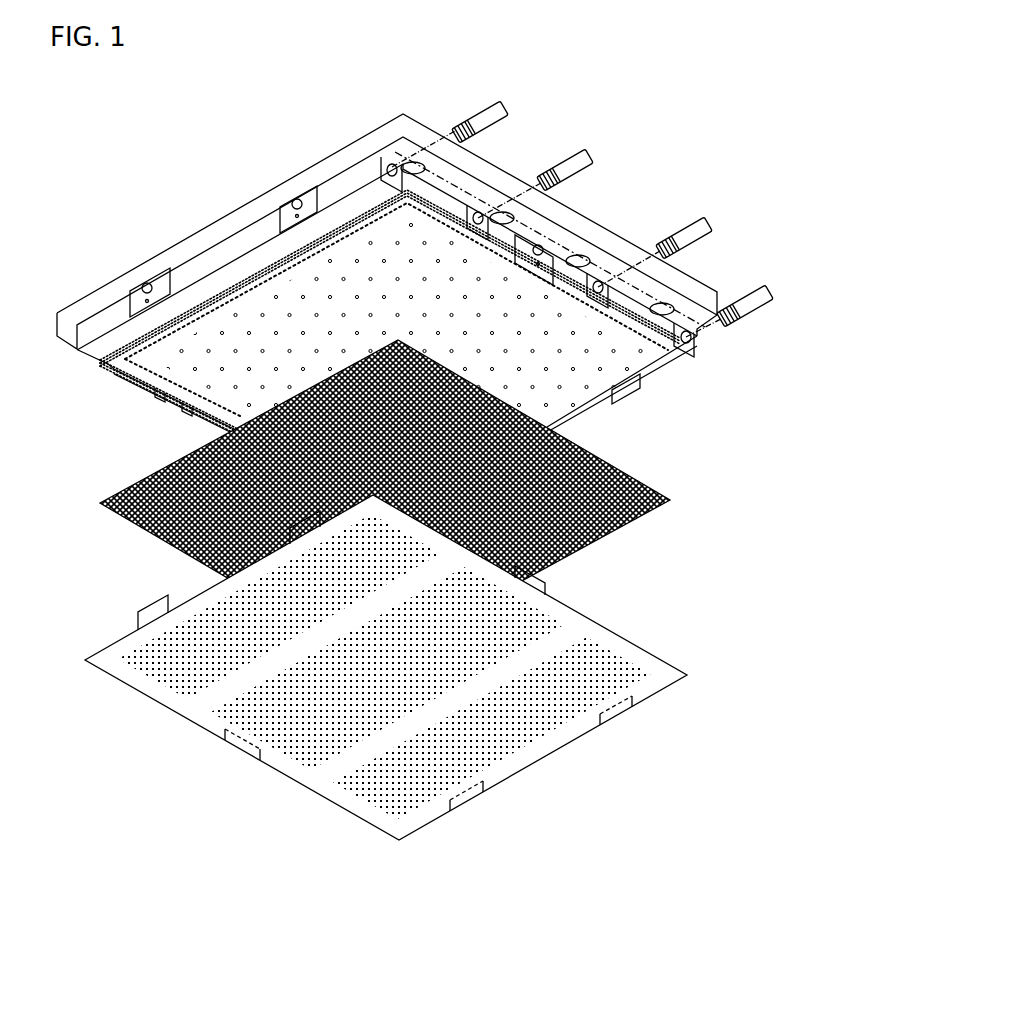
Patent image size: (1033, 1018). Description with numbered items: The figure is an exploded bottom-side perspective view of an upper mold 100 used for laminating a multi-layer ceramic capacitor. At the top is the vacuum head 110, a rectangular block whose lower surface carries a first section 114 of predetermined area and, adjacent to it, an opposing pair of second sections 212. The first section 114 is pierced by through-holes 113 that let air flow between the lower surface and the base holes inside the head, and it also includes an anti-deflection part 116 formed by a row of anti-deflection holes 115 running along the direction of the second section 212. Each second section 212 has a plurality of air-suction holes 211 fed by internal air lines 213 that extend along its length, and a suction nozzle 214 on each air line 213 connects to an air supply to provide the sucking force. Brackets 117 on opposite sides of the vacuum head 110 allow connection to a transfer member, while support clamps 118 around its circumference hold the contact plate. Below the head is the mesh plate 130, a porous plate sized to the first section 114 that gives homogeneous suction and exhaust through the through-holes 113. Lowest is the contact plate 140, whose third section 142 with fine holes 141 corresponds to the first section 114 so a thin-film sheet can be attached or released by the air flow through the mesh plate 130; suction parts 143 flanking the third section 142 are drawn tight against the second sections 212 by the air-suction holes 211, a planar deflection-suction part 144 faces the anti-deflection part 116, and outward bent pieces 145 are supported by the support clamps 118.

The upper mold 100 is at (152, 95).
The vacuum head 110 is at (105, 279).
The through-hole 113 is at (187, 405).
The first section 114 is at (262, 295).
The anti-deflection holes 115 is at (370, 282).
The anti-deflection part 116 is at (400, 275).
The brackets 117 is at (62, 318).
The support clamps 118 is at (147, 285).
The mesh plate 130 is at (678, 501).
The contact plate 140 is at (380, 685).
The fine holes 141 is at (352, 798).
The third section 142 is at (270, 770).
The suction parts 143 is at (196, 597).
The deflection-suction part 144 is at (183, 717).
The bent pieces 145 is at (150, 610).
The air-suction holes 211 is at (235, 273).
The second section 212 is at (92, 365).
The air lines 213 is at (392, 163).
The suction nozzle 214 is at (483, 116).